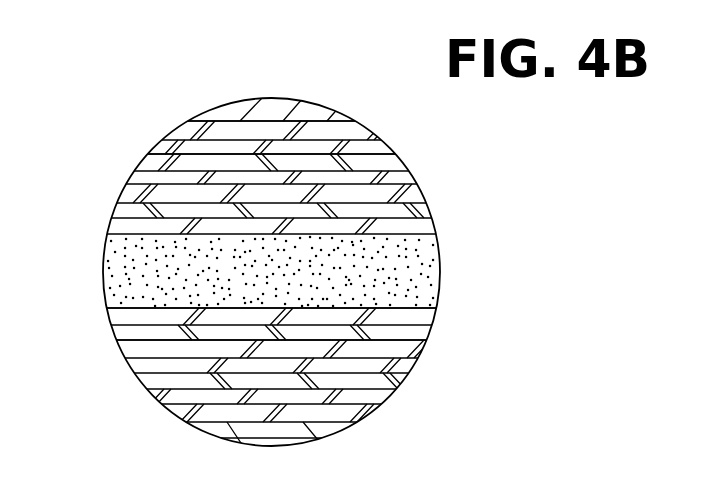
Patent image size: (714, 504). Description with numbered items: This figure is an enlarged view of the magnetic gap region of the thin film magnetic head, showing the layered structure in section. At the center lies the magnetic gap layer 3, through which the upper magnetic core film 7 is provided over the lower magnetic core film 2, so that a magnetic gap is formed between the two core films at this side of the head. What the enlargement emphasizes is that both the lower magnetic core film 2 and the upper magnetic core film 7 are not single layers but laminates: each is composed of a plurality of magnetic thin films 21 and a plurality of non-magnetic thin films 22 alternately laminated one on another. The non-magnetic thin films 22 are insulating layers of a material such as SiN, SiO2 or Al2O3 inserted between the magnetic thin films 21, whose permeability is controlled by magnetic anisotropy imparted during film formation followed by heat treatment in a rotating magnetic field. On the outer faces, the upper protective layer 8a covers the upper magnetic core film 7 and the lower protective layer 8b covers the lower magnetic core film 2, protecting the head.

The upper magnetic core film 7 is at (480, 130).
The lower magnetic core film 2 is at (480, 308).
The magnetic gap layer 3 is at (423, 272).
The magnetic thin film 21 is at (122, 316).
The non-magnetic thin film 22 is at (120, 333).
The upper protective layer 8a is at (310, 110).
The lower protective layer 8b is at (283, 430).